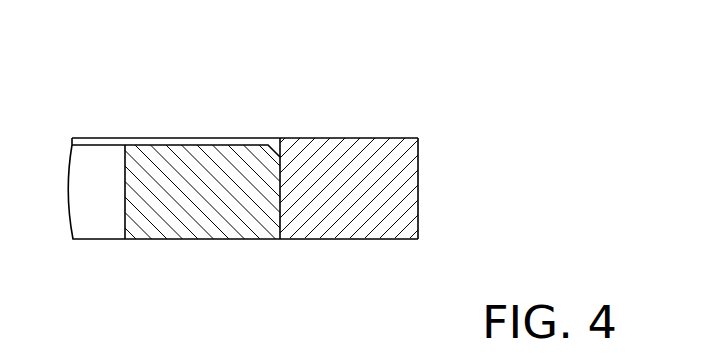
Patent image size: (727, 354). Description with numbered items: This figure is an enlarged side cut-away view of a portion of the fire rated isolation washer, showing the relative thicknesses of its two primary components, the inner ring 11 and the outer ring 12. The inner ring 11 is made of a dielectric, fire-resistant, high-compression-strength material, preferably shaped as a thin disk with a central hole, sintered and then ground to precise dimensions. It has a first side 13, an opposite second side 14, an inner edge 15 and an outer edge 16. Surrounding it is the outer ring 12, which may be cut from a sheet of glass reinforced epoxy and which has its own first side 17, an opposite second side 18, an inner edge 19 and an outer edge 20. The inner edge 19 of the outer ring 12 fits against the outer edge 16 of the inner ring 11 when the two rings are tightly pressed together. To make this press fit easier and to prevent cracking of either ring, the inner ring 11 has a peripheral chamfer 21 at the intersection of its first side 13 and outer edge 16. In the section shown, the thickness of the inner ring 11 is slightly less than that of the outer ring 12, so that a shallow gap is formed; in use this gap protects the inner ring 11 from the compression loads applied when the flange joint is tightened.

The inner ring 11 is at (157, 240).
The outer ring 12 is at (413, 138).
The first side 13 is at (195, 145).
The second side 14 is at (223, 239).
The inner edge 15 is at (126, 198).
The outer edge 16 is at (280, 222).
The first side 17 is at (313, 138).
The second side 18 is at (397, 239).
The inner edge 19 is at (300, 284).
The outer edge 20 is at (418, 181).
The peripheral chamfer 21 is at (291, 143).